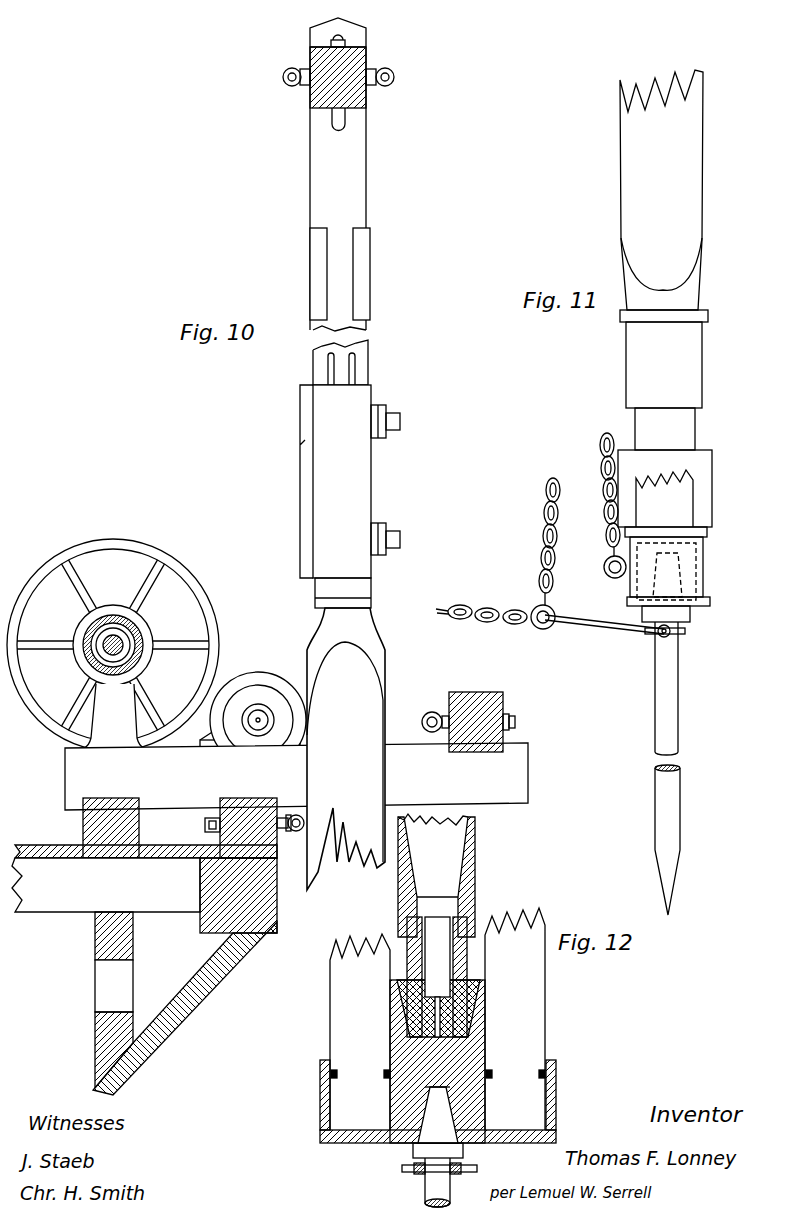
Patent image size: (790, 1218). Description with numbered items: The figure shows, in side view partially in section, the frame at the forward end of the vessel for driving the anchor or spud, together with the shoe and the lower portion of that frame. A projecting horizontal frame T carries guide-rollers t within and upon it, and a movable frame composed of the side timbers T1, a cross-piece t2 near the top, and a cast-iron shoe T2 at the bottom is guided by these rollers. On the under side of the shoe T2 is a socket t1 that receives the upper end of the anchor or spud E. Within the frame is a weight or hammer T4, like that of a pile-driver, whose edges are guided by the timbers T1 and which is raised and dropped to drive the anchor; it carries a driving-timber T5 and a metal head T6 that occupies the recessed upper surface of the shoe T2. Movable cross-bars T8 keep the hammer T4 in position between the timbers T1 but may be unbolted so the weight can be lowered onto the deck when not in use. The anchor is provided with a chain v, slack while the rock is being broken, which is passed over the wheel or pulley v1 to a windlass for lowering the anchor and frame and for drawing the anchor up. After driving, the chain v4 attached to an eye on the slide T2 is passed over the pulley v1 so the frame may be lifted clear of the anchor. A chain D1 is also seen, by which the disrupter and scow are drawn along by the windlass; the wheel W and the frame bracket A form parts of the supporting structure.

In FIG. 10, the cross-piece t2 is at (308, 96).
In FIG. 10, the side timbers T1 is at (380, 349).
In FIG. 11, the side timbers T1 is at (664, 498).
In FIG. 12, the side timbers T1 is at (437, 1019).
In FIG. 10, the weight or hammer T4 is at (332, 500).
In FIG. 10, the movable cross-bars T8 is at (388, 420).
In FIG. 10, the driving-timber T5 is at (360, 672).
In FIG. 11, the driving-timber T5 is at (661, 190).
In FIG. 12, the driving-timber T5 is at (436, 875).
In FIG. 10, the horizontal frame T is at (486, 688).
In FIG. 10, the guide-rollers t is at (430, 712).
In FIG. 10, the wheel or pulley v1 is at (252, 680).
In FIG. 10, the frame bracket A is at (144, 946).
In FIG. 11, the metal head T6 is at (664, 380).
In FIG. 12, the metal head T6 is at (478, 904).
In FIG. 11, the cast-iron shoe T2 is at (712, 468).
In FIG. 12, the cast-iron shoe T2 is at (322, 1090).
In FIG. 12, the socket t1 is at (438, 1088).
In FIG. 11, the shaft E is at (665, 768).
In FIG. 12, the shaft E is at (439, 1175).
In FIG. 11, the chain v4 is at (602, 443).
In FIG. 11, the chain v is at (547, 512).
In FIG. 11, the chain D1 is at (481, 604).
In FIG. 10, the hand wheel W is at (113, 645).